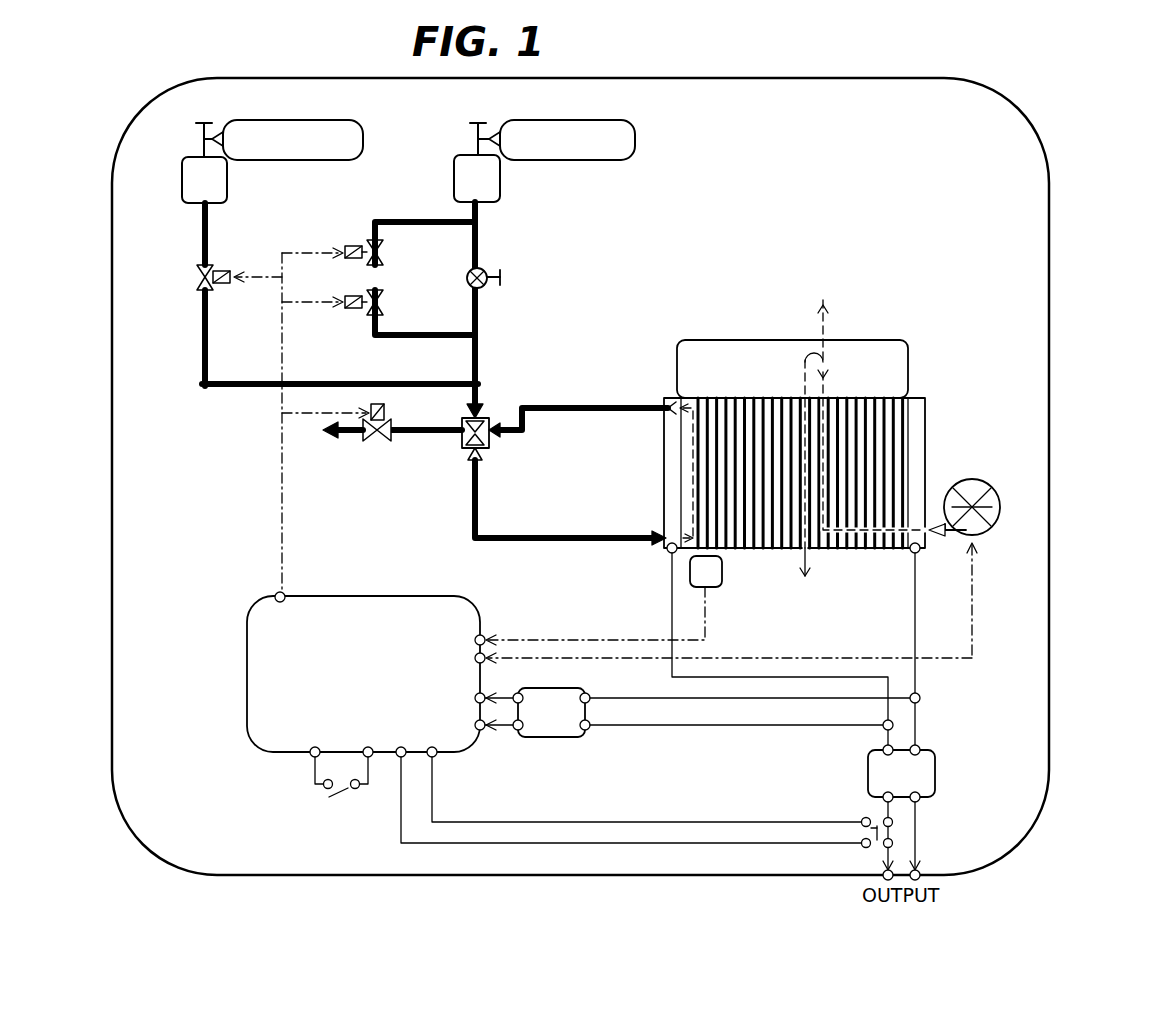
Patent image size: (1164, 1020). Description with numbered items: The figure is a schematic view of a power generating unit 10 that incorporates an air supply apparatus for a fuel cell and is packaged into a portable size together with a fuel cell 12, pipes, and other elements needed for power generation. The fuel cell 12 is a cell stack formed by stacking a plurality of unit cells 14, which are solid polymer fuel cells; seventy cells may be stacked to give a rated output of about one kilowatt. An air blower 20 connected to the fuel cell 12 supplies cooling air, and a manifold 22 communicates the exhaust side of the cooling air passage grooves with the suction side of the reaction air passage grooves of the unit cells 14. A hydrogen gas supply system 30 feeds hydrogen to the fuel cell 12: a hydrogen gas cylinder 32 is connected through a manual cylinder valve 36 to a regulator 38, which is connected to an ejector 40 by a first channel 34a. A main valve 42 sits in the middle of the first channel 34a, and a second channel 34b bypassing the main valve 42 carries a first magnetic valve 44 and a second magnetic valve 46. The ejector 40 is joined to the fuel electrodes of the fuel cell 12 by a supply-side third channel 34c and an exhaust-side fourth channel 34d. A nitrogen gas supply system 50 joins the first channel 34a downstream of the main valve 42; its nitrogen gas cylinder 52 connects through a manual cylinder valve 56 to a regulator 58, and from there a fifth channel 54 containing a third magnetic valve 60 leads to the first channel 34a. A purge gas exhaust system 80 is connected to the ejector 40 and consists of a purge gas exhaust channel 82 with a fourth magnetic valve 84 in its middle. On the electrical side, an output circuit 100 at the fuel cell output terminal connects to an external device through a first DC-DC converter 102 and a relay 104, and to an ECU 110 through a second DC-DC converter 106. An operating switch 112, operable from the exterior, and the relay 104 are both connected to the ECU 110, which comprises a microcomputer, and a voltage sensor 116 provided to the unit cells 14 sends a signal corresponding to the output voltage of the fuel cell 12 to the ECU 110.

The power generating unit 10 is at (1074, 237).
The fuel cell 12 is at (830, 438).
The unit cells 14 is at (899, 421).
The air blower 20 is at (983, 529).
The manifold 22 is at (716, 350).
The hydrogen gas supply system 30 is at (500, 217).
The hydrogen gas cylinder 32 is at (626, 138).
The first channel 34a is at (480, 313).
The second channel 34b is at (423, 220).
The third channel 34c is at (480, 484).
The fourth channel 34d is at (590, 407).
The manual cylinder valve 36 is at (474, 148).
The regulator 38 is at (477, 178).
The ejector 40 is at (489, 420).
The main valve 42 is at (489, 272).
The first magnetic valve 44 is at (382, 248).
The second magnetic valve 46 is at (382, 298).
The nitrogen gas supply system 50 is at (215, 231).
The nitrogen gas cylinder 52 is at (332, 153).
The fifth channel 54 is at (201, 318).
The manual cylinder valve 56 is at (201, 152).
The regulator 58 is at (204, 180).
The third magnetic valve 60 is at (213, 292).
The purge gas exhaust system 80 is at (348, 448).
The purge gas exhaust channel 82 is at (413, 436).
The fourth magnetic valve 84 is at (377, 441).
The output circuit 100 is at (941, 690).
The first DC-DC converter 102 is at (901, 773).
The relay 104 is at (853, 803).
The second DC-DC converter 106 is at (537, 712).
The ECU 110 is at (257, 695).
The operating switch 112 is at (320, 808).
The voltage sensor 116 is at (716, 582).